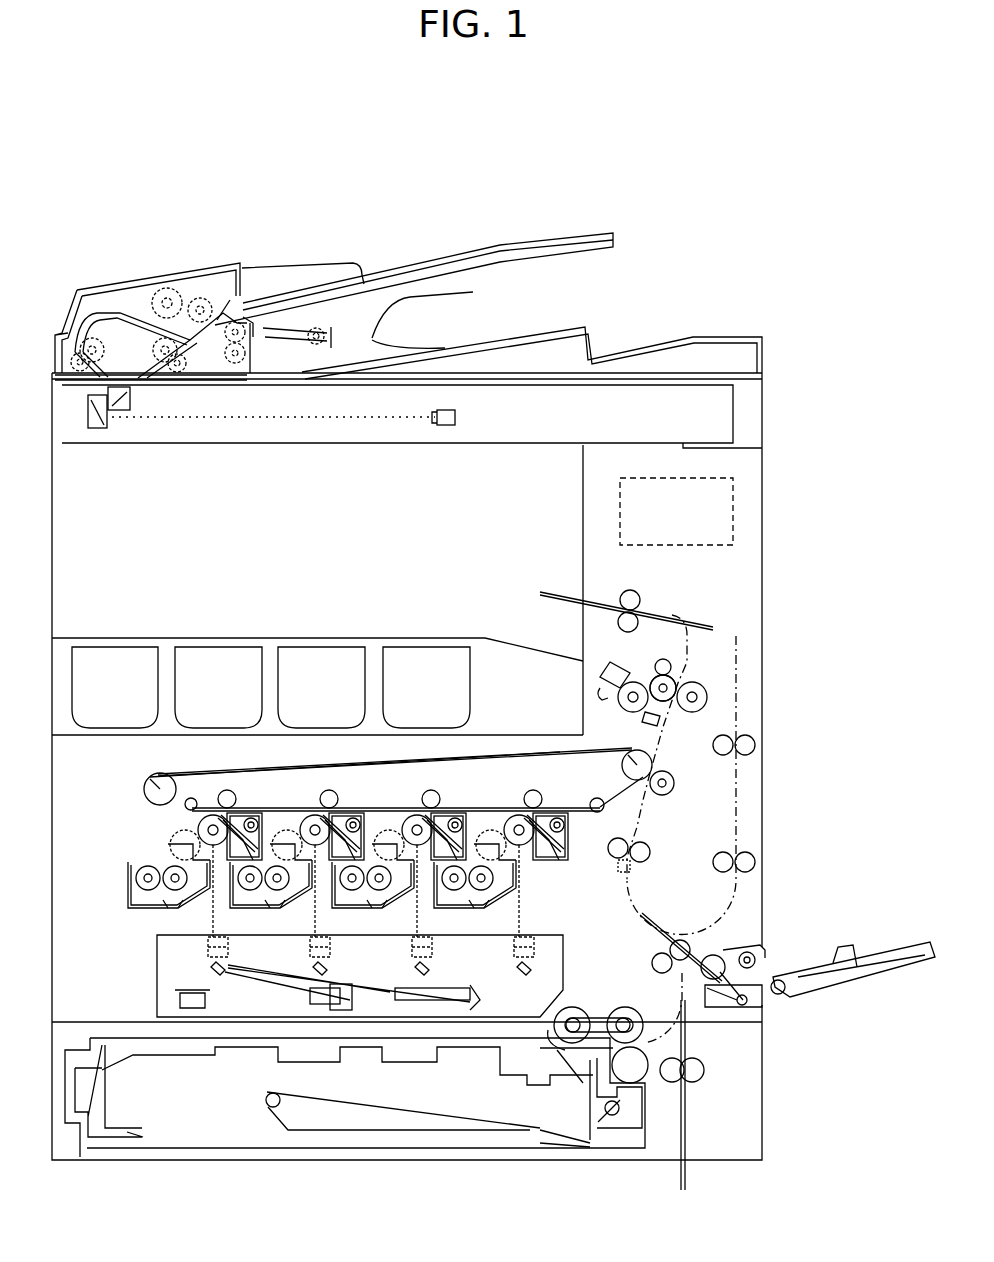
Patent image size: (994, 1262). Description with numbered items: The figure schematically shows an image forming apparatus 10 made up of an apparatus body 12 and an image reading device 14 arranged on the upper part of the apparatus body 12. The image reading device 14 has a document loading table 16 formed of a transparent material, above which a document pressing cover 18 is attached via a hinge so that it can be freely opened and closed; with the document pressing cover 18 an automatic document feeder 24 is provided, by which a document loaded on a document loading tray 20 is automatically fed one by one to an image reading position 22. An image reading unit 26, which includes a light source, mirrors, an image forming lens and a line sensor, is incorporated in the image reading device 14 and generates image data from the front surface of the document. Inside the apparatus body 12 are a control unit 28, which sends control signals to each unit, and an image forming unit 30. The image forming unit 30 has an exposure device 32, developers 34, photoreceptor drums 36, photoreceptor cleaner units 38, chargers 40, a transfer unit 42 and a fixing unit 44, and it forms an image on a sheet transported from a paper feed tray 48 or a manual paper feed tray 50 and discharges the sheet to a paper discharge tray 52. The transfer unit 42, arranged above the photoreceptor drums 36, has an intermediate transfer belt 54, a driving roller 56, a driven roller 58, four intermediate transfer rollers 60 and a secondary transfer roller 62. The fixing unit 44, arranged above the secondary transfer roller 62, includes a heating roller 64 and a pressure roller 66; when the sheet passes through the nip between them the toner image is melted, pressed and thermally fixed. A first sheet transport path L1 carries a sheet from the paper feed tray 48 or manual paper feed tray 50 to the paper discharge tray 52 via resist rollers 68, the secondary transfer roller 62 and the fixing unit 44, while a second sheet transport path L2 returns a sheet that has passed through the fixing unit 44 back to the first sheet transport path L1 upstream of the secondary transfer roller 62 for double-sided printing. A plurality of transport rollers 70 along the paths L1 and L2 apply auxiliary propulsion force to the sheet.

The image forming apparatus 10 is at (138, 122).
The apparatus body 12 is at (763, 520).
The image reading device 14 is at (763, 385).
The document loading table 16 is at (500, 390).
The document pressing cover 18 is at (68, 353).
The document loading tray 20 is at (452, 250).
The image reading position 22 is at (140, 385).
The automatic document feeder 24 is at (262, 258).
The image reading unit 26 is at (82, 405).
The control unit 28 is at (720, 497).
The image forming unit 30 is at (535, 902).
The exposure device 32 is at (185, 995).
The developers 34 is at (180, 848).
The photoreceptor drums 36 is at (195, 812).
The photoreceptor cleaner units 38 is at (235, 822).
The chargers 40 is at (220, 852).
The transfer unit 42 is at (525, 750).
The fixing unit 44 is at (715, 705).
The paper feed tray 48 is at (368, 1108).
The manual paper feed tray 50 is at (890, 953).
The paper discharge tray 52 is at (205, 638).
The intermediate transfer belt 54 is at (500, 752).
The driving roller 56 is at (632, 752).
The driven roller 58 is at (150, 773).
The intermediate transfer rollers 60 is at (222, 790).
The secondary transfer roller 62 is at (678, 792).
The heating roller 64 is at (653, 673).
The pressure roller 66 is at (697, 680).
The resist rollers 68 is at (645, 857).
The transport rollers 70 is at (620, 598).
The first sheet transport path L1 is at (638, 835).
The second sheet transport path L2 is at (736, 800).